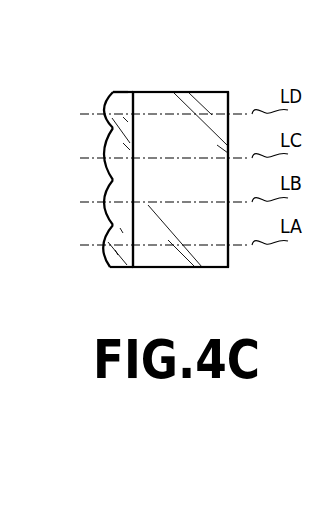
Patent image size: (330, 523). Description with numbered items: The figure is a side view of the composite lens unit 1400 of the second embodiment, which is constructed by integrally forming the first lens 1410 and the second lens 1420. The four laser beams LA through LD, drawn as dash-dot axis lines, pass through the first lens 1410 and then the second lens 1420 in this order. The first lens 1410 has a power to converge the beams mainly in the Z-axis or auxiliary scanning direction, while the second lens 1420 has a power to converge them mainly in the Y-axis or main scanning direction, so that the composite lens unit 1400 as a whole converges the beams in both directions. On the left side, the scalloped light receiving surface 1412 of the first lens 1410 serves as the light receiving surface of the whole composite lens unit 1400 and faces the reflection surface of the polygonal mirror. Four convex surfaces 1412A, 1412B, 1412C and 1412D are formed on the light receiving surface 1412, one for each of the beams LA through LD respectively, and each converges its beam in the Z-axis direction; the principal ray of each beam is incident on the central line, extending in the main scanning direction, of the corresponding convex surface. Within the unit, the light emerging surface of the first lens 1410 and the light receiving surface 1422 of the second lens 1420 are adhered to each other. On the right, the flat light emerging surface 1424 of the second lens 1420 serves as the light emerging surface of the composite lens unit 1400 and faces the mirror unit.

The composite lens unit 1400 is at (209, 63).
The first lens 1410 is at (115, 84).
The light receiving surface 1412 is at (108, 268).
The convex surface 1412A is at (104, 250).
The convex surface 1412B is at (102, 208).
The convex surface 1412C is at (102, 166).
The convex surface 1412D is at (102, 121).
The second lens 1420 is at (160, 92).
The light receiving surface 1422 is at (108, 97).
The light emerging surface 1424 is at (232, 98).